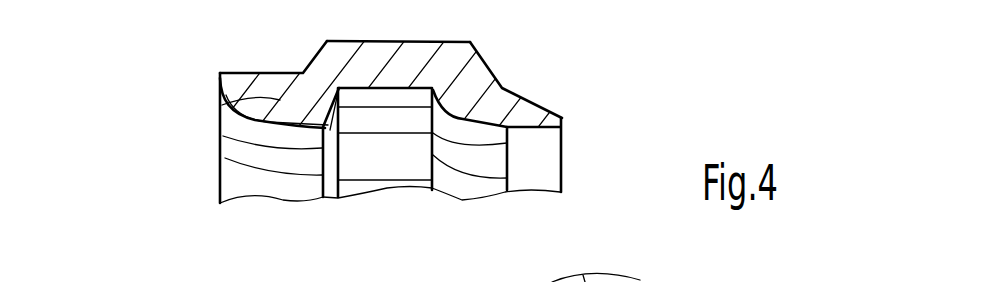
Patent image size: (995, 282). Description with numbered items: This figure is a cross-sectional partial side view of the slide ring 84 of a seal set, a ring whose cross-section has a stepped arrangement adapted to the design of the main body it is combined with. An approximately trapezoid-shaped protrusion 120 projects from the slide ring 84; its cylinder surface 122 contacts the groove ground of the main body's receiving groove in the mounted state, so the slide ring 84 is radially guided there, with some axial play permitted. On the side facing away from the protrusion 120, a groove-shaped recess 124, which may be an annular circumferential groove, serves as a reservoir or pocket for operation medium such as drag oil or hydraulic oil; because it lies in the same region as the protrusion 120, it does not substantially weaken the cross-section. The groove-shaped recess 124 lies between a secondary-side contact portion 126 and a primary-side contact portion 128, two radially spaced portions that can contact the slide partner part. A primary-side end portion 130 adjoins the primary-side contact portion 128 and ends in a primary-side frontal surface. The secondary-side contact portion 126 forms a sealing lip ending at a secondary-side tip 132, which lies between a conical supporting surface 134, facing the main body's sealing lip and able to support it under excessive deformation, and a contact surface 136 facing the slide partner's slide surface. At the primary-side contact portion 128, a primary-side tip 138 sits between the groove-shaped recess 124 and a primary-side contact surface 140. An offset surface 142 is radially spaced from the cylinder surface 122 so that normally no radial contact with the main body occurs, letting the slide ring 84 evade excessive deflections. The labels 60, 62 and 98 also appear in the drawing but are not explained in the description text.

The blade region 60 is at (745, 117).
The root region 62 is at (105, 206).
The slide ring 84 is at (217, 178).
The strip 98 is at (559, 11).
The protrusion 120 is at (410, 36).
The cylinder surface 122 is at (359, 42).
The groove-shaped recess 124 is at (406, 125).
The secondary-side contact portion 126 is at (500, 113).
The primary-side contact portion 128 is at (218, 130).
The primary-side end portion 130 is at (219, 87).
The secondary-side tip 132 is at (507, 131).
The conical supporting surface 134 is at (544, 110).
The contact surface 136 is at (544, 138).
The primary-side tip 138 is at (339, 130).
The primary-side contact surface 140 is at (285, 125).
The offset surface 142 is at (279, 61).